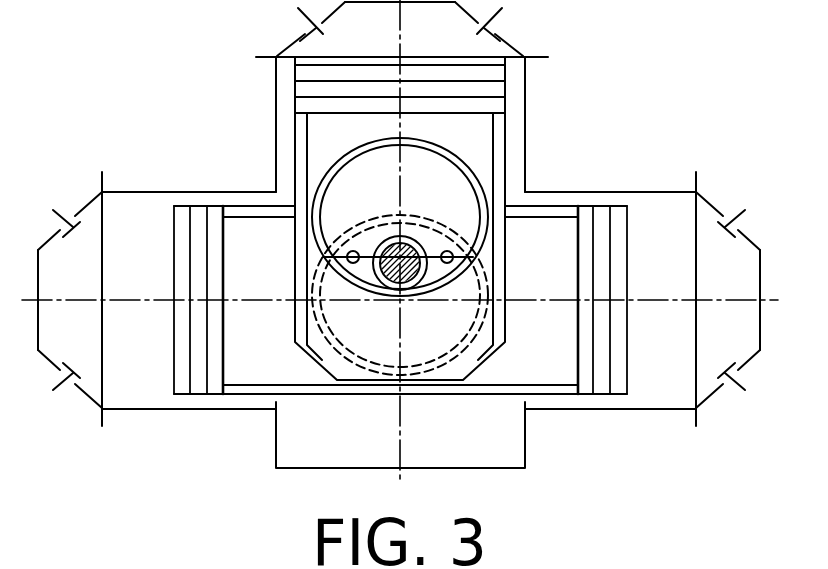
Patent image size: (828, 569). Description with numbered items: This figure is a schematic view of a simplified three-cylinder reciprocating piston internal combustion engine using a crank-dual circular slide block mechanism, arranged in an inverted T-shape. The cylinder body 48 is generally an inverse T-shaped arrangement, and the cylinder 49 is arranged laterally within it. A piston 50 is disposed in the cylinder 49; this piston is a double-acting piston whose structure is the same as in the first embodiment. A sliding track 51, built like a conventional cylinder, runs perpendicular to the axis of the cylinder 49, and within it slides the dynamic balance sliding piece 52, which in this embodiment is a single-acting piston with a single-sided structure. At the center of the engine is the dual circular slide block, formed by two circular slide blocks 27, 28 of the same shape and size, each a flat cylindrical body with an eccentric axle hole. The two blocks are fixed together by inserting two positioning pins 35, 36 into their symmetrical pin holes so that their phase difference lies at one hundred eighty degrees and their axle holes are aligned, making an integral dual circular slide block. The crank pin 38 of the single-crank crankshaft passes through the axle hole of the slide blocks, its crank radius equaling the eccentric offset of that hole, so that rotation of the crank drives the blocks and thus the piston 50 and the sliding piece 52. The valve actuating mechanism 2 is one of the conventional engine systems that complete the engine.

The valve actuating mechanism 2 is at (697, 403).
The circular slide block 27 is at (464, 338).
The circular slide block 28 is at (466, 161).
The positioning pin 35 is at (351, 250).
The positioning pin 36 is at (444, 250).
The crank pin 38 is at (380, 217).
The cylinder body 48 is at (275, 188).
The cylinder 49 is at (125, 400).
The piston 50 is at (200, 387).
The sliding track 51 is at (290, 439).
The dynamic balance sliding piece 52 is at (493, 107).